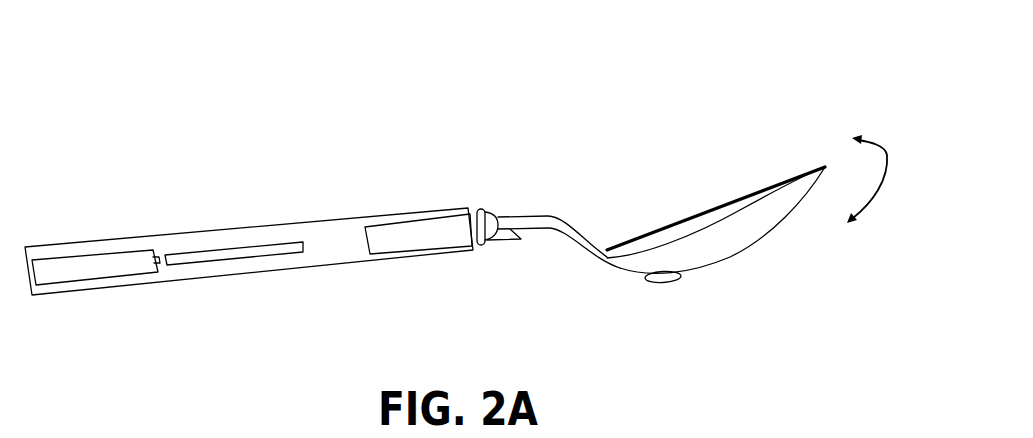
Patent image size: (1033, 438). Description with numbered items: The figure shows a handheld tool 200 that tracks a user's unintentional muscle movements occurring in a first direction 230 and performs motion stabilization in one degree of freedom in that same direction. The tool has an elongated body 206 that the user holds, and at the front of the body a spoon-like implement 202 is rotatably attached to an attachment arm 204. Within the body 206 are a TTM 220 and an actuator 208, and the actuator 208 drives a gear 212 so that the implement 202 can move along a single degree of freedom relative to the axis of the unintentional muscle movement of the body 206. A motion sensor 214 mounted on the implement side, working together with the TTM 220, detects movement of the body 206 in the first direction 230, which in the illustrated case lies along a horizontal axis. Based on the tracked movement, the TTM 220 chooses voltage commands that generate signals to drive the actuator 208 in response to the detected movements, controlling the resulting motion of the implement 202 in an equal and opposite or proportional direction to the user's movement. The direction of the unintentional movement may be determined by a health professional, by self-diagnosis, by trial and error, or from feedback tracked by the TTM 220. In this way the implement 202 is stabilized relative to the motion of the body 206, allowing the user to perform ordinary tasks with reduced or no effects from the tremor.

The handheld tool 200 is at (582, 60).
The implement 202 is at (722, 195).
The attachment arm 204 is at (485, 212).
The body 206 is at (208, 278).
The actuator 208 is at (430, 210).
The gear 212 is at (503, 246).
The motion sensor 214 is at (662, 283).
The TTM 220 is at (219, 243).
The first direction 230 is at (887, 152).